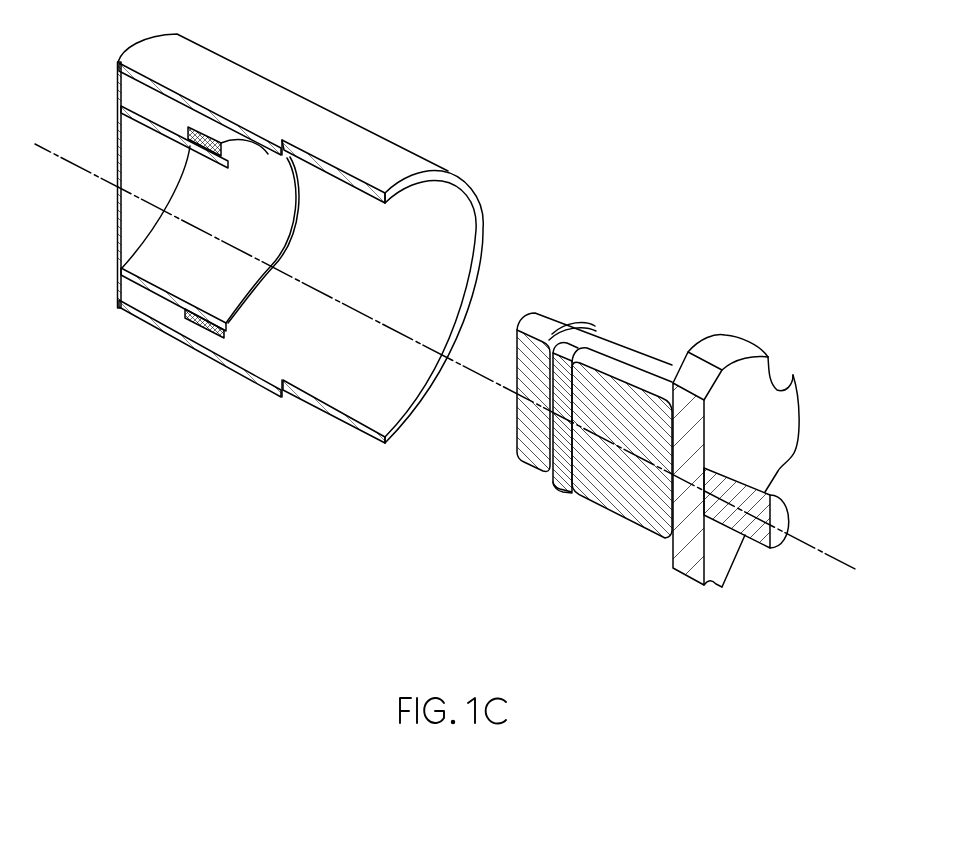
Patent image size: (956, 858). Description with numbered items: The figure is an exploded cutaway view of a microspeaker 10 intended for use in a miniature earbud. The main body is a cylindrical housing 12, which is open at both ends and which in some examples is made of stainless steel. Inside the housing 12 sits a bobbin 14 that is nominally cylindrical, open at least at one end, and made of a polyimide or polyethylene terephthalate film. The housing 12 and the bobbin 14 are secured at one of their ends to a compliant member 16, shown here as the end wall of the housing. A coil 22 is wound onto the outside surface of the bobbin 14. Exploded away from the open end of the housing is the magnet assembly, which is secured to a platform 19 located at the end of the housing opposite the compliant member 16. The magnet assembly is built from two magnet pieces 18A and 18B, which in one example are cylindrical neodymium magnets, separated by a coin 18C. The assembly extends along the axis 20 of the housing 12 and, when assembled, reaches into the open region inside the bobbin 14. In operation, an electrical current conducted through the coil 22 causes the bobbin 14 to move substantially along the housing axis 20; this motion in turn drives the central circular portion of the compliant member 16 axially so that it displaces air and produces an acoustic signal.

The microspeaker 10 is at (445, 323).
The cylindrical housing 12 is at (398, 163).
The bobbin 14 is at (166, 120).
The compliant member 16 is at (117, 241).
The magnet piece 18A is at (623, 500).
The magnet piece 18B is at (528, 459).
The coin 18C is at (563, 474).
The platform 19 is at (687, 568).
The axis 20 is at (62, 162).
The coil 22 is at (210, 130).